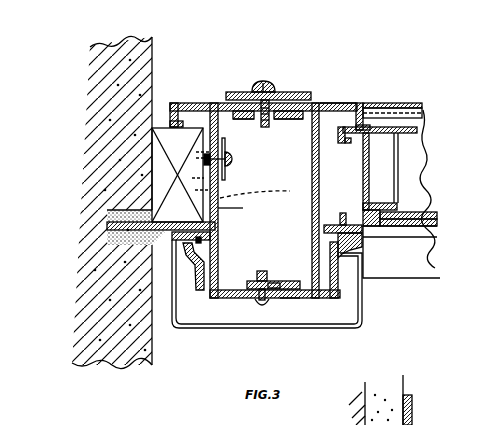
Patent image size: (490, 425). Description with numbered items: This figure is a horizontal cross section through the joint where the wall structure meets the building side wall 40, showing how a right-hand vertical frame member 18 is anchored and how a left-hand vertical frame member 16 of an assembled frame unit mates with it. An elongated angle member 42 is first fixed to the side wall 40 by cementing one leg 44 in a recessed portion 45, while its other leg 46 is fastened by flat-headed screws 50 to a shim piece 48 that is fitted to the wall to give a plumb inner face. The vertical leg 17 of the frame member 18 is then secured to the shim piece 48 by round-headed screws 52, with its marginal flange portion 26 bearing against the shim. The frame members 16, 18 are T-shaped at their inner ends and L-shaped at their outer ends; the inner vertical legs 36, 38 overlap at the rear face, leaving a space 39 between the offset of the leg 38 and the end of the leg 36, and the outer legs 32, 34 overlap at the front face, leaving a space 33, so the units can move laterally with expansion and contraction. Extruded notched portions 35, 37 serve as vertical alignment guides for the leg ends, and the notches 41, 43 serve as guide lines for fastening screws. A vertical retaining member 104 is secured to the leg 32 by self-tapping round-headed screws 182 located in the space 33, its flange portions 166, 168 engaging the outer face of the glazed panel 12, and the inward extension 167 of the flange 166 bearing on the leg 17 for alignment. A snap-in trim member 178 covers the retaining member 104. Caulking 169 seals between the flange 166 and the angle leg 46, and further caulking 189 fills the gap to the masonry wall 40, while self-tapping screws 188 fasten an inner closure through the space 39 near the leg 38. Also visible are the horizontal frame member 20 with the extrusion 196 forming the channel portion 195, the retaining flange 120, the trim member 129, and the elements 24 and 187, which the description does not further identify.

The side wall 40 is at (153, 52).
The recessed portion 45 is at (107, 213).
The leg of angle member 44 is at (107, 226).
The shim piece 48 is at (163, 130).
The right hand vertical frame member 18 is at (199, 102).
The vertical retaining member 104 is at (228, 302).
The marginal flange portion 26 is at (174, 104).
The left hand vertical frame member 16 is at (335, 102).
The vertical leg 36 is at (238, 102).
The self-tapping screws 188 is at (266, 88).
The notch 43 is at (251, 110).
The vertical leg 38 is at (292, 108).
The space 39 is at (284, 103).
The notched portion 37 is at (251, 104).
The clamp block edge 187 is at (302, 104).
The leg of angle member 46 is at (220, 183).
The round-headed screws 52 is at (228, 158).
The flat-headed screws 50 is at (255, 193).
The angle member 42 is at (239, 208).
The notched portion 35 is at (283, 280).
The notch 41 is at (262, 271).
The vertical leg 32 is at (268, 282).
The space 33 is at (271, 306).
The vertical leg 34 is at (288, 297).
The inward extension 167 is at (210, 240).
The vertical leg 17 is at (218, 256).
The caulking compound 189 is at (172, 262).
The flange portion 166 is at (176, 275).
The self-tapping round-headed screws 182 is at (254, 310).
The snap-in trim member 178 is at (332, 329).
The caulking compound 169 is at (196, 224).
The flange portion 168 is at (360, 232).
The extrusion 196 is at (402, 103).
The channel portion 195 is at (423, 108).
The mounting plate 24 is at (418, 130).
The horizontal frame member 20 is at (428, 152).
The glazed panel 12 is at (420, 226).
The marginal retaining flange 120 is at (438, 238).
The trim member 129 is at (403, 278).